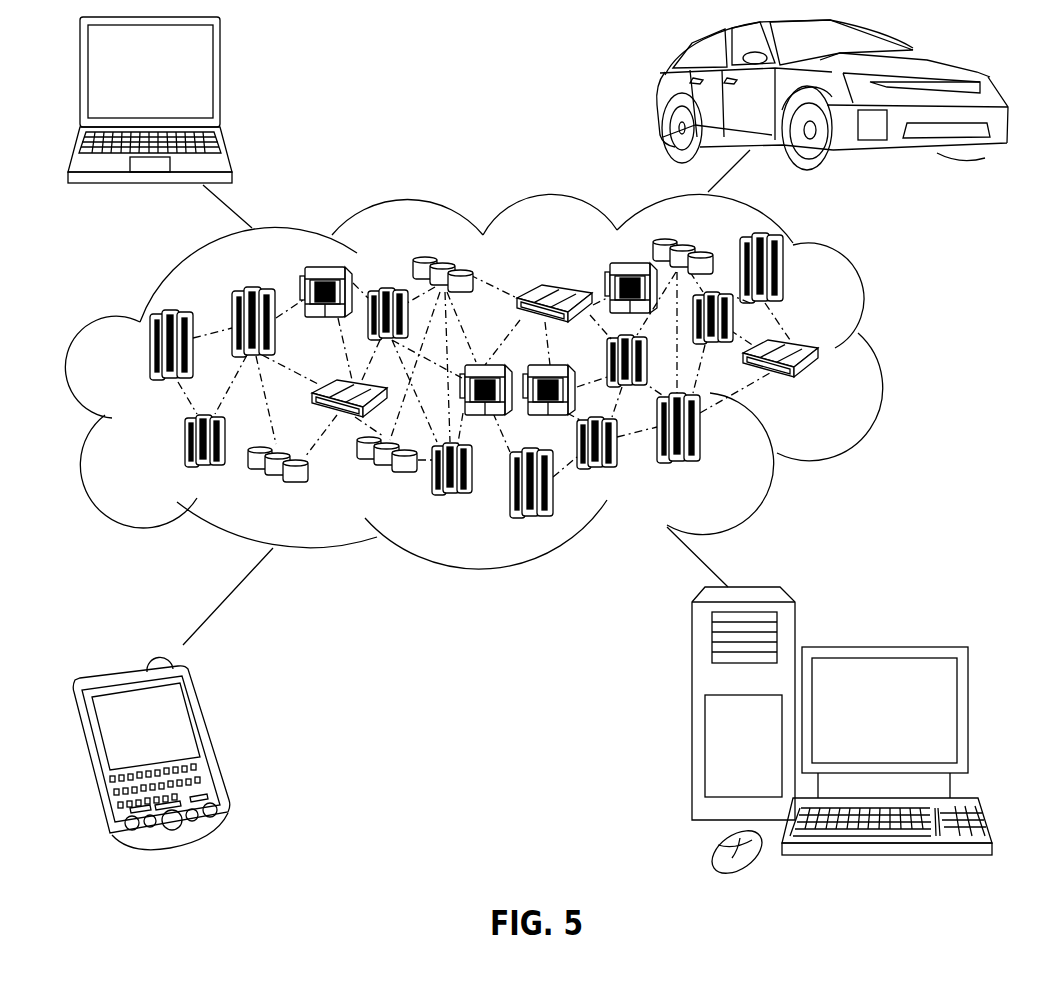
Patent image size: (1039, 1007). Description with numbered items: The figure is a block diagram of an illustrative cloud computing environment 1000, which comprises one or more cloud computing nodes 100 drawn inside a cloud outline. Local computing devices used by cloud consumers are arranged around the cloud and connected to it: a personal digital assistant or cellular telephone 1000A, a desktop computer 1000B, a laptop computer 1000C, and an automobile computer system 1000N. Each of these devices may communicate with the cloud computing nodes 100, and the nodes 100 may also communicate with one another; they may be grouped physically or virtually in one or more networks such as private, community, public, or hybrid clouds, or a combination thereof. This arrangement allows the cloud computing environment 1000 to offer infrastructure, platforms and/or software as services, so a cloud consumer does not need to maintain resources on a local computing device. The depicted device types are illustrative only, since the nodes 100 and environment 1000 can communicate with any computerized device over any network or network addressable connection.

The laptop computer 1000C is at (222, 80).
The automobile computer system 1000N is at (662, 98).
The cloud computing environment 1000 is at (884, 354).
The cloud computing nodes 100 is at (832, 385).
The personal digital assistant (PDA) or cellular telephone 1000A is at (210, 740).
The desktop computer 1000B is at (882, 645).